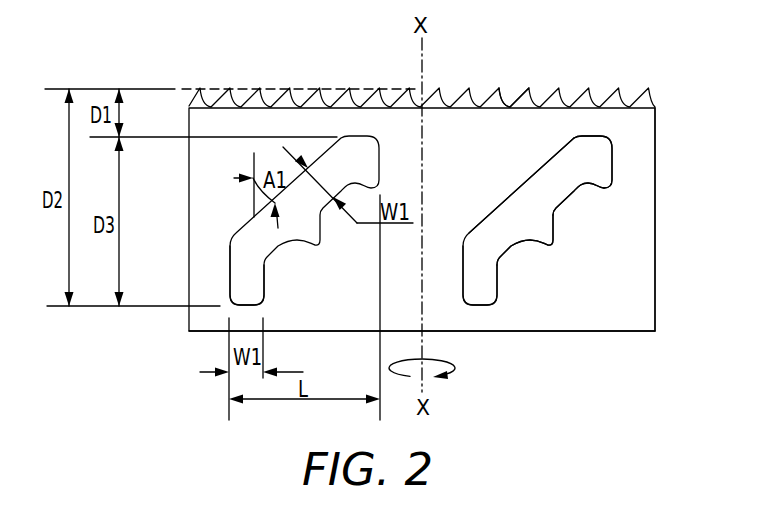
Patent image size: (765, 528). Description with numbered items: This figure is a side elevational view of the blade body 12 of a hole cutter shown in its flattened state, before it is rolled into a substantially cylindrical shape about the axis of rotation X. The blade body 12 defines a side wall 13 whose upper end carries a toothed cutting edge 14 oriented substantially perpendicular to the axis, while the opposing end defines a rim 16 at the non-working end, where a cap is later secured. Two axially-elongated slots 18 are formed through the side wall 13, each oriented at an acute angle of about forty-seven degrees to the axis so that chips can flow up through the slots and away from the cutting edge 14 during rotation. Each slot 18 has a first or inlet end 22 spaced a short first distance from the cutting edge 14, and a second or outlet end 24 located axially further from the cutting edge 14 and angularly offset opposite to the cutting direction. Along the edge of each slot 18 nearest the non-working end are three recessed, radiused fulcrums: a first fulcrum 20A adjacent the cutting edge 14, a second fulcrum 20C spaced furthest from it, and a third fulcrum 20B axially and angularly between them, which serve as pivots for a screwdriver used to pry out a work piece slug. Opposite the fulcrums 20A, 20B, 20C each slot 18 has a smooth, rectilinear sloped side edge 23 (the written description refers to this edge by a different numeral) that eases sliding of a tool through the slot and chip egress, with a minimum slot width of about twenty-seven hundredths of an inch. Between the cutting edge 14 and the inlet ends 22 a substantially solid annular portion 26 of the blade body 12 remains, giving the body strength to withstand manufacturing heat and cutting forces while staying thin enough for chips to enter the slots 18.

The blade body 12 is at (175, 190).
The side wall 13 is at (627, 305).
The cutting edge 14 is at (548, 100).
The rim 16 is at (587, 332).
The axially-elongated slot 18 is at (292, 237).
The first fulcrum 20A is at (603, 188).
The third fulcrum 20B is at (550, 244).
The second fulcrum 20C is at (478, 305).
The first or inlet end 22 is at (593, 136).
The straight slot edge 23 is at (543, 170).
The second or outlet end 24 is at (245, 308).
The annular portion 26 is at (517, 138).